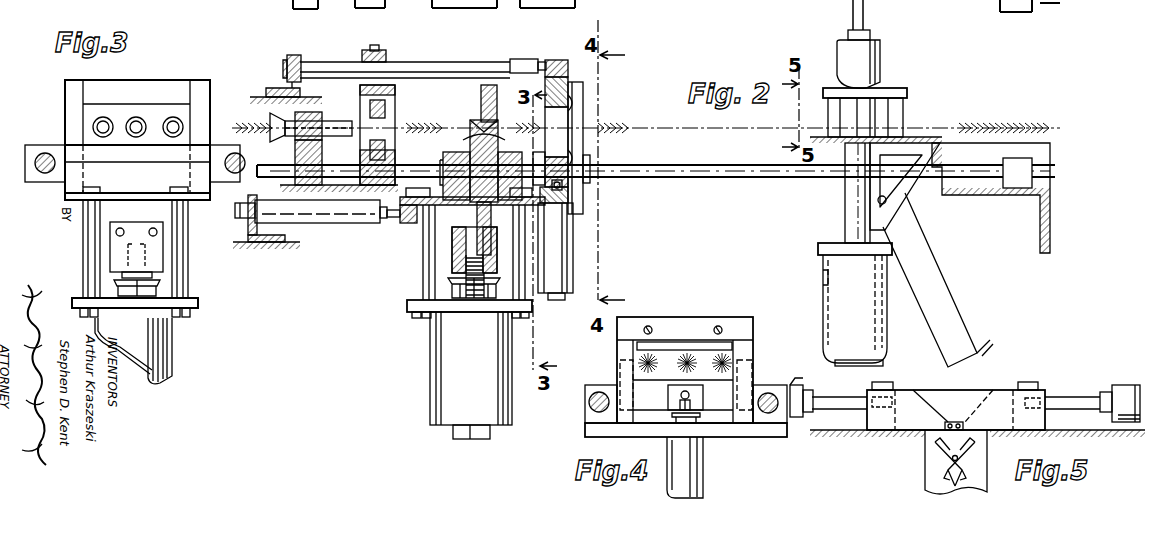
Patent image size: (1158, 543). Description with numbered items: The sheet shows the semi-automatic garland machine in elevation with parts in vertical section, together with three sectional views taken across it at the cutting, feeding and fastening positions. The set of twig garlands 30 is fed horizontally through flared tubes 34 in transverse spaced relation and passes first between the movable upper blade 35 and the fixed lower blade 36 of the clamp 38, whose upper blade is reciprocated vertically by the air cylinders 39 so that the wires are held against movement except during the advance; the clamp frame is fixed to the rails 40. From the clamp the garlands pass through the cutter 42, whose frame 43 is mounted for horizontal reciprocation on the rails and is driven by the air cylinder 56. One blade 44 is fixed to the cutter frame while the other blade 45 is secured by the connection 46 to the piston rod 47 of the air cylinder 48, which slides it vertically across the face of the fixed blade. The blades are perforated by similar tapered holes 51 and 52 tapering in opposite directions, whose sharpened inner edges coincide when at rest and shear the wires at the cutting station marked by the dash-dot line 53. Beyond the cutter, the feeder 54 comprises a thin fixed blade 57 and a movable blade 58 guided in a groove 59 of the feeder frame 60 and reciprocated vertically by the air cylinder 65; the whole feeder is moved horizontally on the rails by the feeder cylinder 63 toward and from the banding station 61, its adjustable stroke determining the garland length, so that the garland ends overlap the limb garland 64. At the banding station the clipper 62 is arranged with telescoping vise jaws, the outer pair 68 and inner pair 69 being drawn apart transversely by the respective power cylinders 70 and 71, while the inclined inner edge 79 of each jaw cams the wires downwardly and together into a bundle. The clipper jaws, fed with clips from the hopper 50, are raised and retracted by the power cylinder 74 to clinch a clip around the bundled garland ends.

In FIG. 2, the twig garlands 30 is at (238, 126).
In FIG. 4, the twig garlands 30 is at (748, 365).
In FIG. 2, the flared tubes 34 is at (330, 125).
In FIG. 2, the movable upper blade 35 is at (386, 108).
In FIG. 2, the fixed lower blade 36 is at (386, 149).
In FIG. 2, the clamp 38 is at (394, 68).
In FIG. 2, the air cylinders 39 is at (368, 52).
In FIG. 3, the rails 40 is at (43, 175).
In FIG. 2, the rails 40 is at (738, 195).
In FIG. 4, the rails 40 is at (590, 403).
In FIG. 3, the cutter 42 is at (56, 94).
In FIG. 3, the cutter frame 43 is at (43, 147).
In FIG. 2, the cutter frame 43 is at (445, 205).
In FIG. 3, the fixed cutter blade 44 is at (158, 110).
In FIG. 2, the fixed cutter blade 44 is at (488, 118).
In FIG. 3, the movable cutter blade 45 is at (165, 214).
In FIG. 2, the movable cutter blade 45 is at (476, 114).
In FIG. 3, the connection 46 is at (160, 262).
In FIG. 2, the connection 46 is at (453, 262).
In FIG. 2, the piston rod 47 is at (472, 280).
In FIG. 3, the air cylinder 48 is at (173, 359).
In FIG. 2, the air cylinder 48 is at (432, 370).
In FIG. 2, the hopper 50 is at (946, 275).
In FIG. 3, the tapered holes 51 is at (104, 117).
In FIG. 2, the tapered holes 51 is at (500, 136).
In FIG. 2, the tapered holes 52 is at (474, 138).
In FIG. 2, the cutting station 53 is at (606, 109).
In FIG. 2, the feeder 54 is at (563, 56).
In FIG. 4, the feeder 54 is at (701, 316).
In FIG. 2, the air cylinder 56 is at (326, 225).
In FIG. 2, the fixed feeder blade 57 is at (575, 86).
In FIG. 4, the fixed feeder blade 57 is at (666, 347).
In FIG. 2, the movable feeder blade 58 is at (578, 200).
In FIG. 4, the movable feeder blade 58 is at (660, 409).
In FIG. 4, the groove 59 is at (620, 369).
In FIG. 4, the feeder frame 60 is at (620, 349).
In FIG. 2, the banding station 61 is at (848, 204).
In FIG. 2, the clipper 62 is at (818, 281).
In FIG. 2, the feeder cylinder 63 is at (473, 56).
In FIG. 2, the limb garland 64 is at (972, 127).
In FIG. 2, the air cylinder 65 is at (576, 264).
In FIG. 4, the air cylinder 65 is at (704, 467).
In FIG. 5, the outer pair of vise jaws 68 is at (976, 396).
In FIG. 5, the inner pair of vise jaws 69 is at (909, 396).
In FIG. 2, the power cylinder 70 is at (881, 57).
In FIG. 5, the power cylinder 70 is at (1113, 386).
In FIG. 5, the power cylinder 71 is at (807, 393).
In FIG. 2, the power cylinder 74 is at (823, 315).
In FIG. 5, the inner edge 79 is at (935, 404).